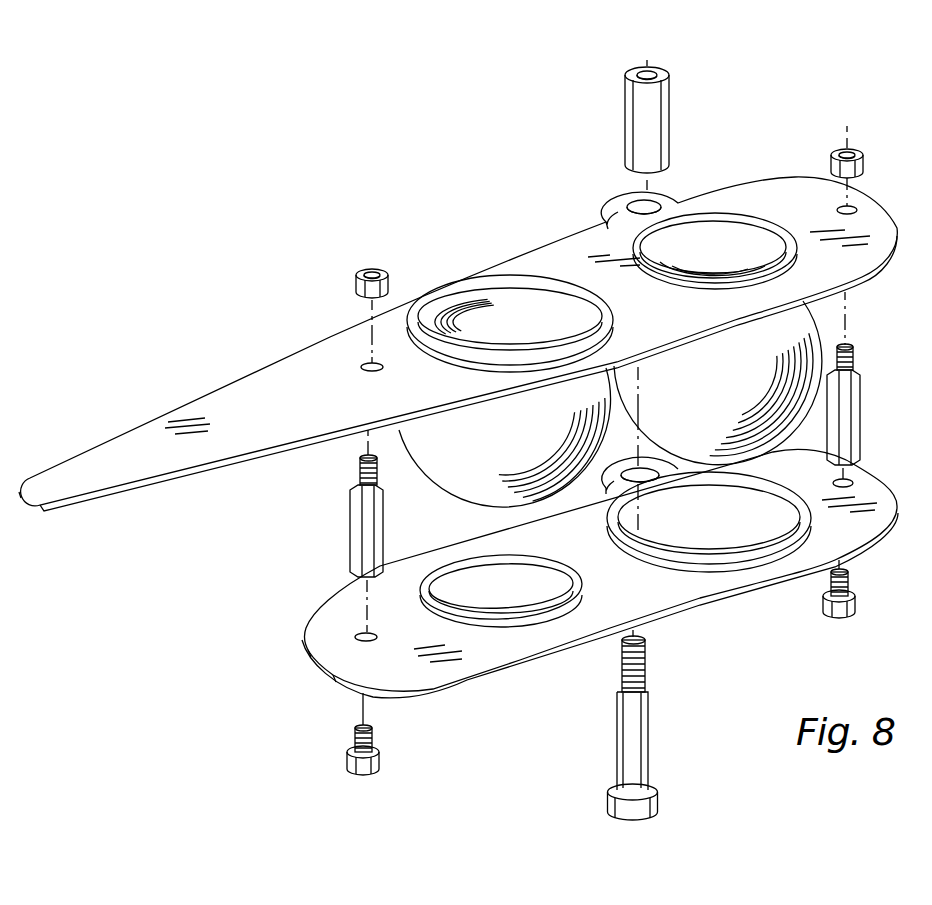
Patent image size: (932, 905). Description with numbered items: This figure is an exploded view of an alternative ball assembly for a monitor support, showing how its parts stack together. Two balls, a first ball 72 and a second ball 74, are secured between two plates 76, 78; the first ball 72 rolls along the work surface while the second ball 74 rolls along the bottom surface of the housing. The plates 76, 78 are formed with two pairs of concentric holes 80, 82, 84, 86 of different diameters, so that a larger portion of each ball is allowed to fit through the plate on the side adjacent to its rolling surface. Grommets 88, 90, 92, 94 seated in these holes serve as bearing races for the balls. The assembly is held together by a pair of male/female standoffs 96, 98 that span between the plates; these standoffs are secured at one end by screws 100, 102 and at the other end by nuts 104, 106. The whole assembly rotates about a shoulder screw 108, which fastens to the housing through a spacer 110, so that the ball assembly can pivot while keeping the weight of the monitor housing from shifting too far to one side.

The first ball 72 is at (720, 381).
The second ball 74 is at (507, 446).
The plate 76 is at (318, 407).
The plate 78 is at (414, 636).
The concentric hole 80 is at (502, 284).
The concentric hole 82 is at (464, 580).
The concentric hole 84 is at (718, 232).
The concentric hole 86 is at (748, 507).
The grommet 88 is at (596, 300).
The grommet 90 is at (554, 566).
The grommet 92 is at (756, 228).
The grommet 94 is at (673, 564).
The male/female standoff 96 is at (353, 516).
The male/female standoff 98 is at (860, 417).
The screw 100 is at (383, 759).
The screw 102 is at (858, 604).
The nut 104 is at (355, 285).
The nut 106 is at (885, 175).
The shoulder screw 108 is at (636, 716).
The spacer 110 is at (670, 105).